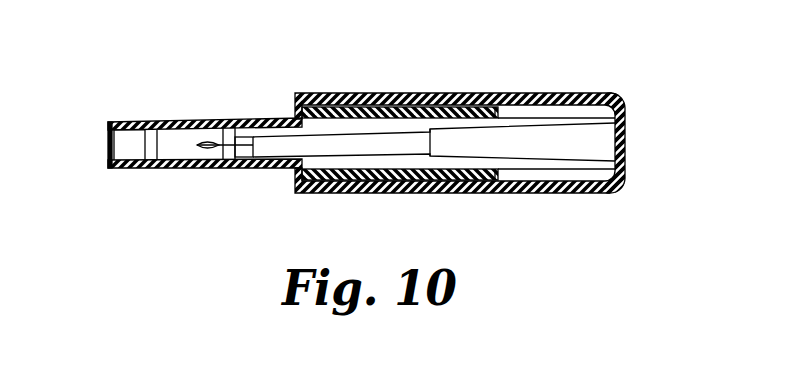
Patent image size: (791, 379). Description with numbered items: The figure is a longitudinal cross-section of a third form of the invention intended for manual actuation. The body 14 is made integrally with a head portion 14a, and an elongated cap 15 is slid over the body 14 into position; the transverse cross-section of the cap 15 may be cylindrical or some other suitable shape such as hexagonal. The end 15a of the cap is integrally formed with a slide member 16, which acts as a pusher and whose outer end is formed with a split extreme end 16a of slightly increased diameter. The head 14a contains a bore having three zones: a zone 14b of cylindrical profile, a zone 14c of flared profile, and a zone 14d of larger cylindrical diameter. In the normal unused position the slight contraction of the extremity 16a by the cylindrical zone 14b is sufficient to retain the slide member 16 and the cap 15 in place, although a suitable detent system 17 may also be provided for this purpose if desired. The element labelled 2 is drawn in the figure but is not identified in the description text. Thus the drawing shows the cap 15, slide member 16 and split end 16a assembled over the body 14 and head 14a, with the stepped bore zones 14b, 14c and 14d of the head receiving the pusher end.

The optical element 2 is at (207, 136).
The body 14 is at (404, 104).
The head portion 14a is at (197, 169).
The zone of cylindrical profile 14b is at (178, 135).
The zone of flared profile 14c is at (112, 146).
The zone of larger cylindrical diameter 14d is at (142, 152).
The cap 15 is at (525, 193).
The end of the cap 15a is at (624, 124).
The slide member 16 is at (463, 144).
The split extreme end 16a is at (228, 138).
The detent system 17 is at (306, 104).